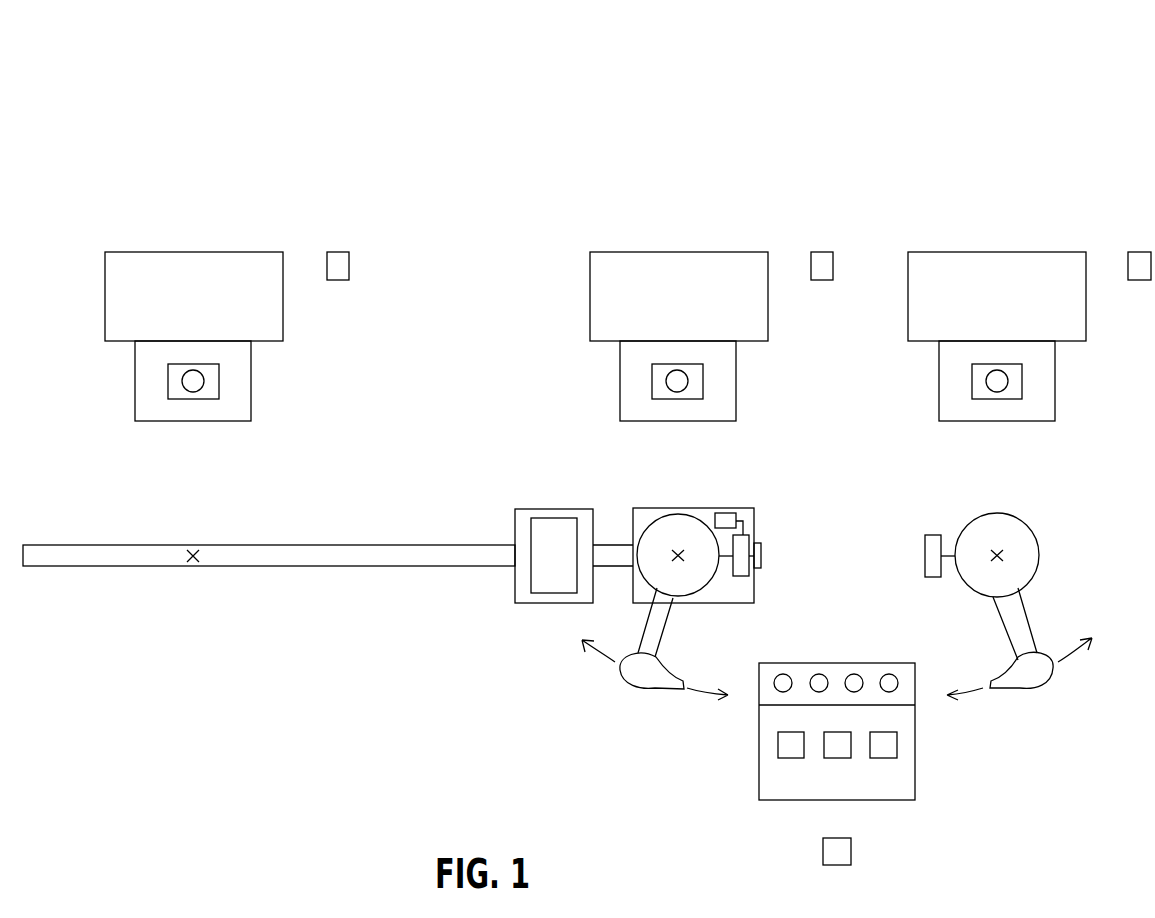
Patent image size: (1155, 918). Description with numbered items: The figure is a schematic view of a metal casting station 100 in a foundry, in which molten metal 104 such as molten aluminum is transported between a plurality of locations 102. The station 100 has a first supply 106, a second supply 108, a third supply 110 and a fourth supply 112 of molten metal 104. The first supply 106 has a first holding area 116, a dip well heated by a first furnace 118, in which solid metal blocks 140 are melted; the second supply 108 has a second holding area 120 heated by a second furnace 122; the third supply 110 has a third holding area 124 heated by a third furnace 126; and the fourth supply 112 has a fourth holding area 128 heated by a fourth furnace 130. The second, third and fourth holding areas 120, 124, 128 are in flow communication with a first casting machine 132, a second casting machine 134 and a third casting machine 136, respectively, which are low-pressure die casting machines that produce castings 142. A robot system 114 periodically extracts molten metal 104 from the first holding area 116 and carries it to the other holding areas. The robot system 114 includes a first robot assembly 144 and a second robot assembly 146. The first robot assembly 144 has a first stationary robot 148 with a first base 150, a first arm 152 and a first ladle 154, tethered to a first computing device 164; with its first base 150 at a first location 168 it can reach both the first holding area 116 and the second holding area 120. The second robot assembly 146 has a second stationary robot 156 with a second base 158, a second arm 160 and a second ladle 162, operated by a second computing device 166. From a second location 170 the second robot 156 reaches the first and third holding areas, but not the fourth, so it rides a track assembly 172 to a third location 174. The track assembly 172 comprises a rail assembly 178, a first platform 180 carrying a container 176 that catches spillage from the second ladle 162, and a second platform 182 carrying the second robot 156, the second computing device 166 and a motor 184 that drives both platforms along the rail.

The station 100 is at (258, 97).
The locations 102 is at (93, 253).
The molten metal 104 is at (204, 381).
The first supply 106 is at (878, 663).
The second supply 108 is at (939, 383).
The third supply 110 is at (620, 383).
The fourth supply 112 is at (135, 383).
The robot system 114 is at (912, 537).
The first holding area 116 is at (783, 663).
The first furnace 118 is at (759, 771).
The second holding area 120 is at (997, 399).
The second furnace 122 is at (1055, 406).
The third holding area 124 is at (678, 399).
The third furnace 126 is at (736, 406).
The fourth holding area 128 is at (193, 399).
The fourth furnace 130 is at (251, 406).
The first casting machine 132 is at (996, 252).
The second casting machine 134 is at (678, 252).
The third casting machine 136 is at (193, 252).
The solid metal blocks 140 is at (823, 838).
The castings 142 is at (338, 252).
The first robot assembly 144 is at (1055, 713).
The second robot assembly 146 is at (508, 653).
The first stationary robot 148 is at (1038, 538).
The first base 150 is at (1013, 515).
The first arm 152 is at (1030, 618).
The first ladle 154 is at (1050, 677).
The second stationary robot 156 is at (627, 685).
The second base 158 is at (663, 513).
The second arm 160 is at (663, 642).
The second ladle 162 is at (637, 643).
The first computing device 164 is at (925, 556).
The second computing device 166 is at (762, 556).
The first location 168 is at (996, 552).
The second location 170 is at (678, 552).
The track assembly 172 is at (460, 537).
The third location 174 is at (192, 548).
The container 176 is at (553, 518).
The rail assembly 178 is at (314, 567).
The first platform 180 is at (520, 509).
The second platform 182 is at (745, 535).
The motor 184 is at (733, 513).